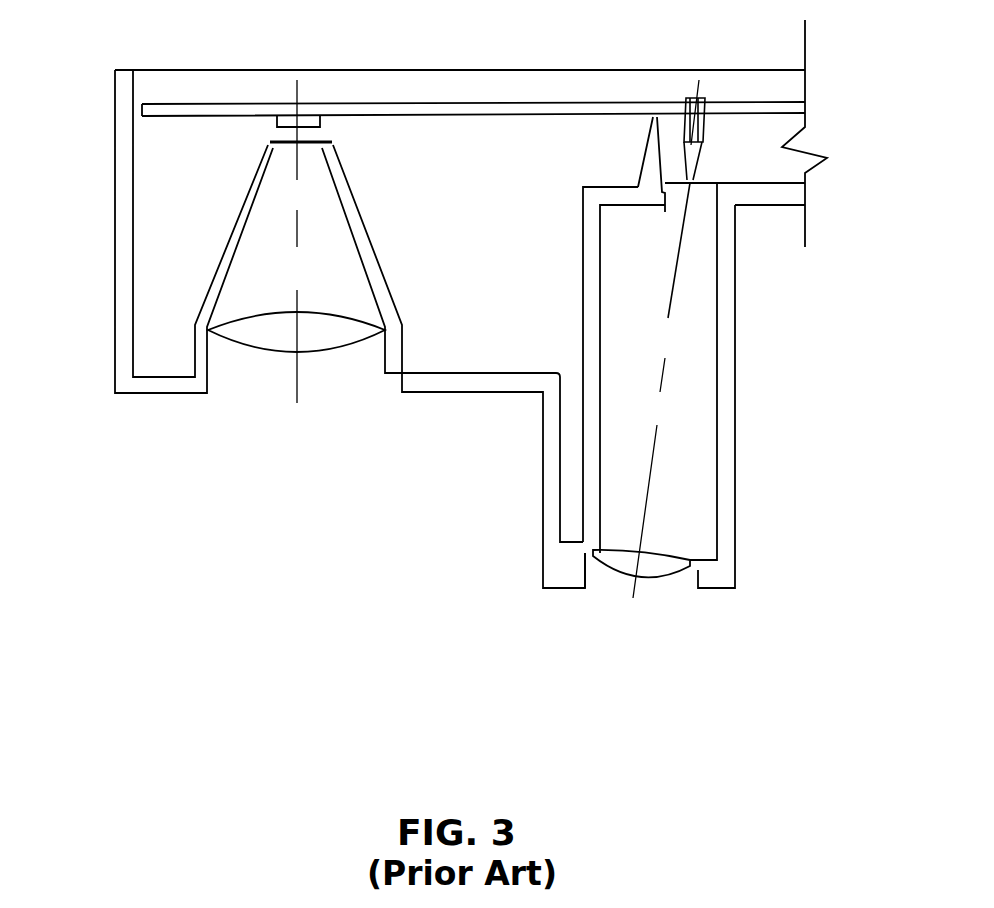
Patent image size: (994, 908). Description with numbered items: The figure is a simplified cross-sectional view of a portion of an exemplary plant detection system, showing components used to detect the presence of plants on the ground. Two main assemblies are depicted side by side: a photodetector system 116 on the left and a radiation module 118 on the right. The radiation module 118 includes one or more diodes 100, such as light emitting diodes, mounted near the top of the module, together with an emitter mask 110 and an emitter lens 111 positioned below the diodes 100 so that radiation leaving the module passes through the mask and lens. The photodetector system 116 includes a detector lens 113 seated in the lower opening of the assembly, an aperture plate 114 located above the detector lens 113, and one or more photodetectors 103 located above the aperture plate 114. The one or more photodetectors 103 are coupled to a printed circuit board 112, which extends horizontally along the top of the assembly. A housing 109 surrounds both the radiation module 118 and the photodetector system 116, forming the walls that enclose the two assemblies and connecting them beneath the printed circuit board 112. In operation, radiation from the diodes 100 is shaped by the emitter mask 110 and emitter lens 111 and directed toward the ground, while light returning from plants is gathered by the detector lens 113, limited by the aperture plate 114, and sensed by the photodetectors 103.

The diode 100 is at (697, 158).
The photodetector 103 is at (287, 112).
The housing 109 is at (113, 150).
The emitter mask 110 is at (692, 185).
The emitter lens 111 is at (660, 576).
The printed circuit board 112 is at (468, 101).
The detector lens 113 is at (268, 352).
The aperture plate 114 is at (332, 142).
The photodetector system 116 is at (420, 313).
The radiation module 118 is at (748, 444).